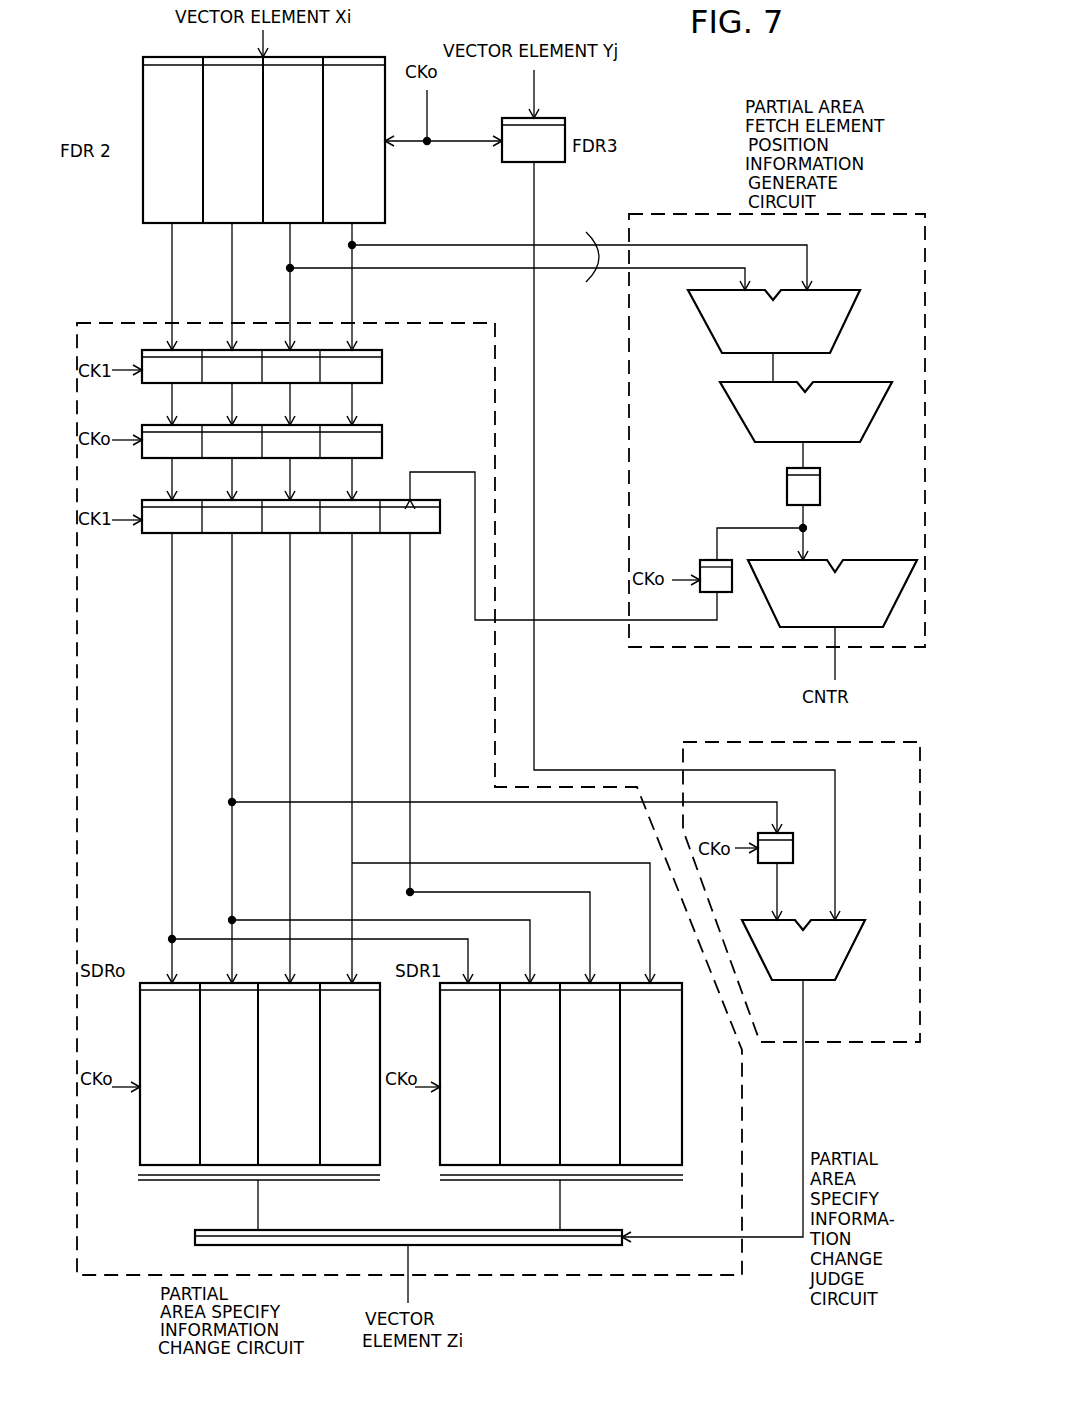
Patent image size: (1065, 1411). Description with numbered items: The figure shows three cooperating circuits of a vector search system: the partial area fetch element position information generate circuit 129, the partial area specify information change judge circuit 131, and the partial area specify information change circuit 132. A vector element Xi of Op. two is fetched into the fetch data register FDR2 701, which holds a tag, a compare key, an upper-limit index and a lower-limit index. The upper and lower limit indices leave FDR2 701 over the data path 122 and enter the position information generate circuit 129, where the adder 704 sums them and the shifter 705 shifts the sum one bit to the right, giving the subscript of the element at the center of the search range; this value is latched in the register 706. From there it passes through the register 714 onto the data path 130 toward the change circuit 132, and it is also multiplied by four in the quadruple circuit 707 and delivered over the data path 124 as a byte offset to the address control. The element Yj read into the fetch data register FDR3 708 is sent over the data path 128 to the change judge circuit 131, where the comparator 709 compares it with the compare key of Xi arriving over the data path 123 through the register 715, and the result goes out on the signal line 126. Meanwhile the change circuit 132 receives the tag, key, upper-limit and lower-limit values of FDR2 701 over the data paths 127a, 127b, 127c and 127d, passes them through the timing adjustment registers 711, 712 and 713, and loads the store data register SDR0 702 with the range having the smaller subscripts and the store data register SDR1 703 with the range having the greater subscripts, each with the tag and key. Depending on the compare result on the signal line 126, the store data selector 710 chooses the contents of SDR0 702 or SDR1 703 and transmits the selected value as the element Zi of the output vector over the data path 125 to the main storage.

The fetch data register FDR2 701 is at (162, 57).
The store data register SDR0 702 is at (140, 1165).
The store data register SDR1 703 is at (440, 1165).
The adder 704 is at (846, 320).
The shifter 705 is at (738, 432).
The register 706 is at (787, 492).
The quadruple circuit 707 is at (858, 560).
The fetch data register FDR3 708 is at (473, 133).
The comparator 709 is at (848, 955).
The store data selector 710 is at (215, 1230).
The register 711 is at (382, 364).
The register 712 is at (382, 435).
The register 713 is at (142, 533).
The register 714 is at (705, 560).
The register 715 is at (793, 838).
The data path 122 is at (547, 274).
The data path 123 is at (535, 802).
The data path 124 is at (835, 672).
The data path 125 is at (408, 1283).
The signal line 126 is at (700, 1237).
The data path 127a is at (172, 307).
The data path 127b is at (232, 300).
The data path 127c is at (290, 300).
The data path 127d is at (352, 292).
The data path 128 is at (534, 708).
The partial area fetch element position information generate circuit 129 is at (715, 214).
The data path 130 is at (585, 620).
The partial area specify information change judge circuit 131 is at (873, 1045).
The partial area specify information change circuit 132 is at (118, 1278).